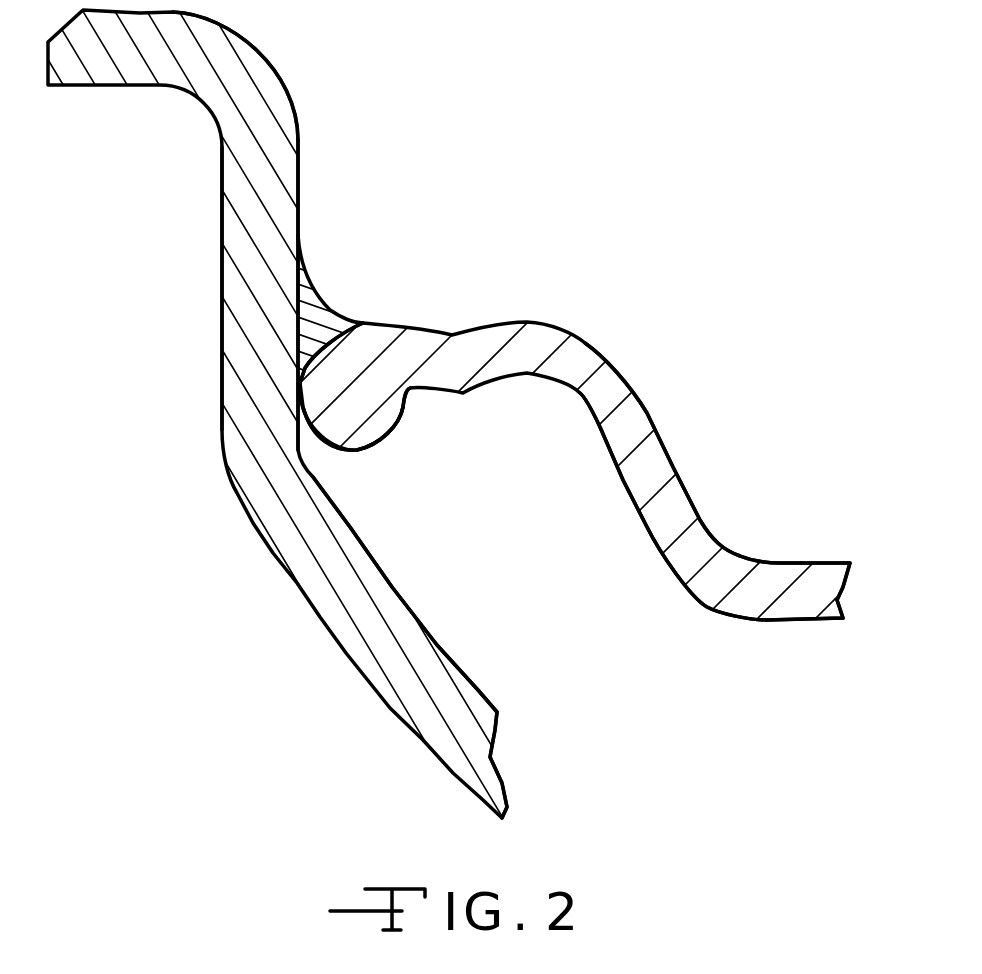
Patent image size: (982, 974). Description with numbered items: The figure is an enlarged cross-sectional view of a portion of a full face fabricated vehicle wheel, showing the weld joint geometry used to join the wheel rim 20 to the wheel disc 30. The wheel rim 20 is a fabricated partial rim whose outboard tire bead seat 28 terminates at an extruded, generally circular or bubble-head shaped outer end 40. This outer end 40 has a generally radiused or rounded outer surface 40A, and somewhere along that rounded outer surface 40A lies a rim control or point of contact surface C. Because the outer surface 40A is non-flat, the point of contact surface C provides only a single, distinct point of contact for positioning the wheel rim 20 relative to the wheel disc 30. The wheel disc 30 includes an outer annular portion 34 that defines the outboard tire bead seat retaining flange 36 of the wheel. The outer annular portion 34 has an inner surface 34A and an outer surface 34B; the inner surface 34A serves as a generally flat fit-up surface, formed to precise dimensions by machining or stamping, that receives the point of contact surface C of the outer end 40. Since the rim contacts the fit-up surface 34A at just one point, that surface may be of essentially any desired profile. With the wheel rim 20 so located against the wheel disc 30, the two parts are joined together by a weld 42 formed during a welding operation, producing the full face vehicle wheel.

The wheel rim 20 is at (665, 439).
The outboard tire bead seat 28 is at (452, 333).
The wheel disc 30 is at (479, 689).
The outer annular portion 34 is at (390, 708).
The inner surface 34A is at (298, 205).
The outer surface 34B is at (220, 223).
The outboard tire bead seat retaining flange 36 is at (298, 163).
The outer end 40 is at (357, 450).
The outer surface 40A is at (392, 430).
The weld 42 is at (318, 297).
The point of contact surface C is at (297, 391).